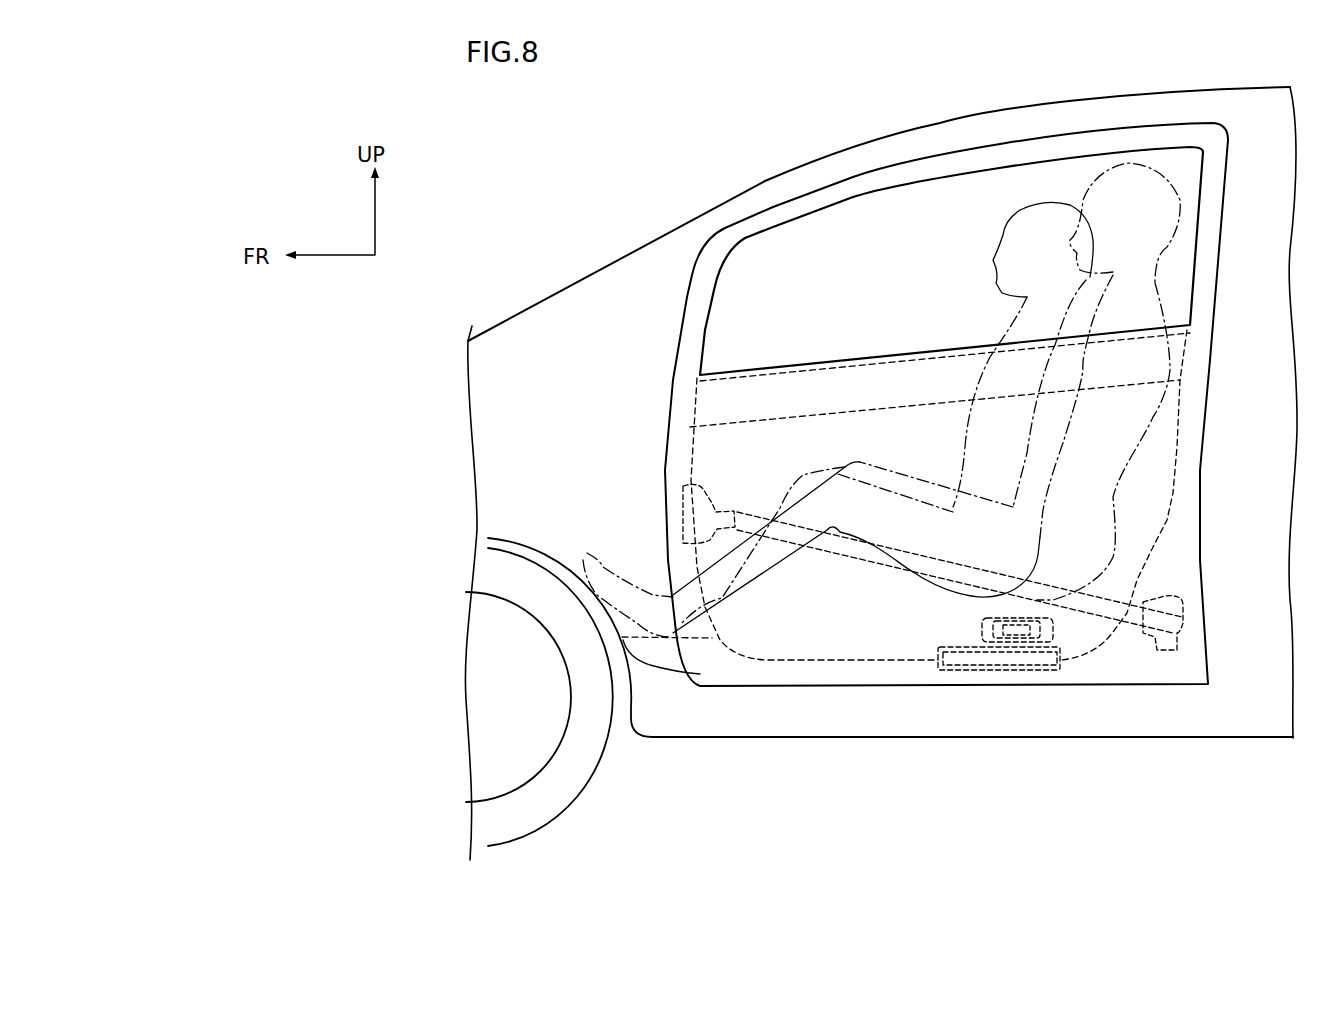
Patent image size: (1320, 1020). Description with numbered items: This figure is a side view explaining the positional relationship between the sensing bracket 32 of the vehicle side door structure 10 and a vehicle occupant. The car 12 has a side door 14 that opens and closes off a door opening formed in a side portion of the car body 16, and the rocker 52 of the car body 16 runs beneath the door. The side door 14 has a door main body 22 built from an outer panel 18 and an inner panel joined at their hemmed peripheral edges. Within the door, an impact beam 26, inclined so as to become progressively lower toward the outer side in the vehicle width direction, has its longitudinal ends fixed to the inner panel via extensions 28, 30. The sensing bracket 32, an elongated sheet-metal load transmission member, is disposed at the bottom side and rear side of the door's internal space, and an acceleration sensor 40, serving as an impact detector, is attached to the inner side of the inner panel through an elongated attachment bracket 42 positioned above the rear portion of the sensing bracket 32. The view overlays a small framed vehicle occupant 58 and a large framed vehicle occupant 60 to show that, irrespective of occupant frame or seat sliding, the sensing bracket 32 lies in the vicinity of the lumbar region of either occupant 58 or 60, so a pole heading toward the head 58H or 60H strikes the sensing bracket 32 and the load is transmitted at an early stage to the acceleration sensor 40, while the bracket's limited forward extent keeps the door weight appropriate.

The vehicle side door structure 10 is at (925, 442).
The car 12 is at (692, 135).
The side door 14 is at (859, 168).
The car body 16 is at (627, 252).
The outer panel 18 is at (946, 455).
The door main body 22 is at (837, 674).
The impact beam 26 is at (842, 552).
The extension 28 is at (710, 478).
The extension 30 is at (1160, 595).
The sensing bracket 32 is at (950, 672).
The acceleration sensor 40 is at (1033, 617).
The attachment bracket 42 is at (980, 628).
The rocker 52 is at (707, 714).
The small framed vehicle occupant 58 is at (858, 364).
The head of small framed vehicle occupant 58H is at (1040, 200).
The large framed vehicle occupant 60 is at (923, 345).
The head of large framed vehicle occupant 60H is at (1128, 165).